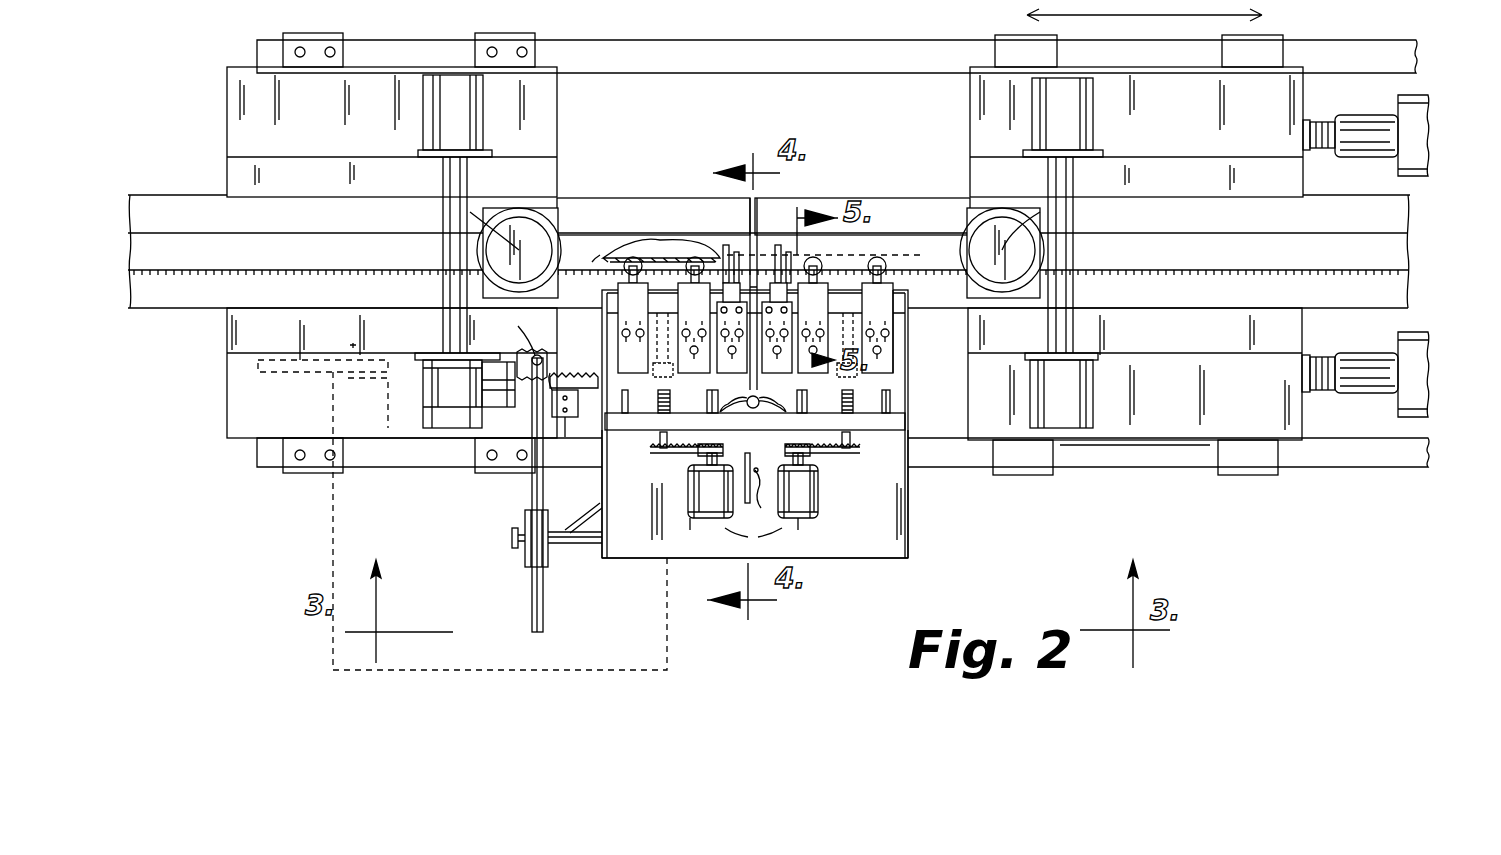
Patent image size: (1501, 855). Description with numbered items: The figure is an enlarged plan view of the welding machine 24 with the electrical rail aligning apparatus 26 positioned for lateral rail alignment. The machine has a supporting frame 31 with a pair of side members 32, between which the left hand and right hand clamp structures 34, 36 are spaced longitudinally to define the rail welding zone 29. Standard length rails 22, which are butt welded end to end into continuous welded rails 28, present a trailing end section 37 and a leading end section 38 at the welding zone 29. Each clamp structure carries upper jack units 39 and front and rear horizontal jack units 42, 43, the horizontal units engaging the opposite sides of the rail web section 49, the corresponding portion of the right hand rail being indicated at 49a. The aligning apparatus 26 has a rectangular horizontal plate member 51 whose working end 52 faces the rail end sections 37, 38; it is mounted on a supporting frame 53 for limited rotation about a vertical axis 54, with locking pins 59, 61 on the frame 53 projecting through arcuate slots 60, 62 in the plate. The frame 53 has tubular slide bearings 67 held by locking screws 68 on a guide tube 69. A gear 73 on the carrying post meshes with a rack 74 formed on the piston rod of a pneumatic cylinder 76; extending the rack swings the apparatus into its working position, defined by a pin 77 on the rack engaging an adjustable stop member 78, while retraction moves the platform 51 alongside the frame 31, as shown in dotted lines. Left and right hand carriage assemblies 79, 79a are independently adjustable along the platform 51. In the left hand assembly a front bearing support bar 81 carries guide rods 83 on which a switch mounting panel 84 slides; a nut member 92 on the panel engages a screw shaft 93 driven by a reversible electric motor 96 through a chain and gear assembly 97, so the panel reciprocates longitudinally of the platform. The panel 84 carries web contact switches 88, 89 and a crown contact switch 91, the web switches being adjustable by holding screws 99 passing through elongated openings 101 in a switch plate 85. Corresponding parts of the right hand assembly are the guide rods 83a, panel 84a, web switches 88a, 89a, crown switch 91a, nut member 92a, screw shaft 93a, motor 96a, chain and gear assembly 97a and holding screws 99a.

The standard length rails 22 is at (205, 297).
The welding machine 24 is at (981, 509).
The rail aligning apparatus 26 is at (672, 234).
The continuous welded rails 28 is at (192, 199).
The rail welding zone 29 is at (771, 228).
The supporting frame 31 is at (1146, 473).
The side members 32 is at (1362, 50).
The left hand clamp structure 34 is at (546, 203).
The right hand clamp structure 36 is at (982, 203).
The trailing end section 37 is at (685, 200).
The leading end section 38 is at (892, 198).
The upper jack units 39 is at (528, 250).
The front horizontal jack unit 42 is at (420, 106).
The rear horizontal jack unit 43 is at (1097, 105).
The rail web section 49 is at (650, 255).
The adjusting knob 49a is at (922, 255).
The plate member 51 is at (878, 557).
The working end 52 is at (905, 292).
The supporting frame 53 is at (265, 372).
The vertical axis 54 is at (760, 532).
The locking pin 59 is at (753, 430).
The arcuate slot 60 is at (750, 415).
The locking pin 61 is at (745, 540).
The arcuate slot 62 is at (788, 542).
The tubular slide bearings 67 is at (524, 560).
The locking screws 68 is at (512, 538).
The guide tube 69 is at (532, 602).
The gear 73 is at (517, 360).
The rack 74 is at (540, 356).
The pneumatic cylinder 76 is at (490, 415).
The abutment pin 77 is at (550, 398).
The adjustable stop member 78 is at (568, 441).
The left hand carriage assembly 79 is at (638, 404).
The right hand carriage assembly 79a is at (897, 398).
The front bearing support bar 81 is at (930, 440).
The guide rods 83 is at (601, 432).
The guide rods 83a is at (800, 460).
The switch mounting panel 84 is at (612, 323).
The switch mounting panel 84a is at (907, 363).
The switch plate 85 is at (880, 320).
The web contact switch 88 is at (620, 292).
The web contact switch 88a is at (815, 290).
The web contact switch 89 is at (690, 283).
The web contact switch 89a is at (880, 292).
The crown contact switch 91 is at (724, 283).
The crown contact switch 91a is at (768, 283).
The nut member 92 is at (665, 380).
The nut member 92a is at (862, 392).
The screw shaft 93 is at (660, 442).
The screw shaft 93a is at (858, 459).
The reversible electric motor 96 is at (705, 505).
The reversible electric motor 96a is at (810, 505).
The chain and gear assembly 97 is at (663, 470).
The chain and gear assembly 97a is at (850, 470).
The switch holding screws 99 is at (627, 352).
The switch holding screws 99a is at (880, 352).
The elongated openings 101 is at (632, 360).